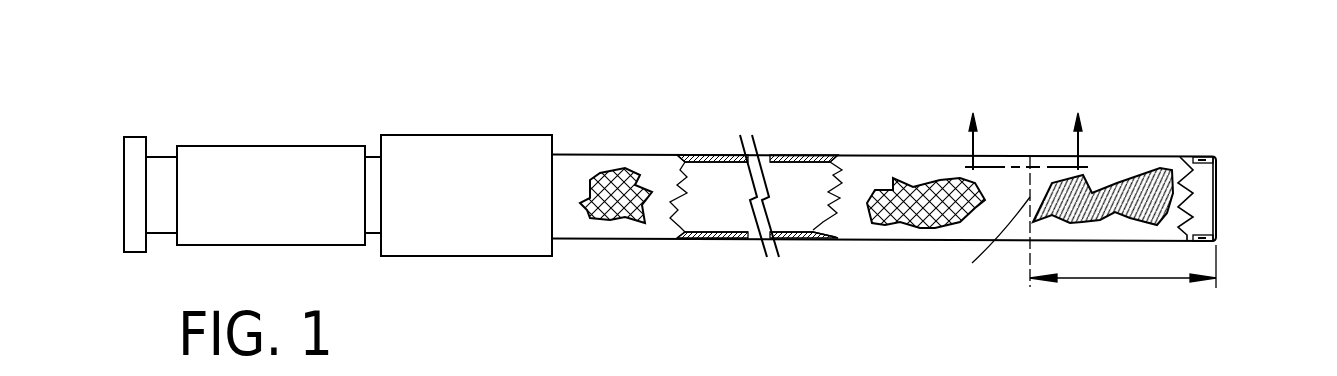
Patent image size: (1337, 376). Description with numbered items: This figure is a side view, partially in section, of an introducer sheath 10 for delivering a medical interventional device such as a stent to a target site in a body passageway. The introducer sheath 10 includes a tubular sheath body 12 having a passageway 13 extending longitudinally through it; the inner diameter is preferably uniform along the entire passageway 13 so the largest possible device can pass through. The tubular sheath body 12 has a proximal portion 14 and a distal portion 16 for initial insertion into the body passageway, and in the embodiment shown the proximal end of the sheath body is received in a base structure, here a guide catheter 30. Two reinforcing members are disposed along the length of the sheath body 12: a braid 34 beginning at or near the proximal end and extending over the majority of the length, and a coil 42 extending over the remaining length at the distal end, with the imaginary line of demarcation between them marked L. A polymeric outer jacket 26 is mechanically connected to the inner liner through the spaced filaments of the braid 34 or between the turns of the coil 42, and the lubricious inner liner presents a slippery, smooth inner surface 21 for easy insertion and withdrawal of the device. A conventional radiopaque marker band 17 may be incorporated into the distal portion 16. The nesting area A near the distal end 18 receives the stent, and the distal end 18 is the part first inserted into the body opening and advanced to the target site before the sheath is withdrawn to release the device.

The introducer sheath 10 is at (766, 98).
The tubular sheath body 12 is at (870, 163).
The passageway 13 is at (805, 215).
The proximal portion 14 is at (568, 153).
The distal portion 16 is at (1191, 158).
The radiopaque marker band 17 is at (1198, 157).
The distal end 18 is at (1215, 157).
The inner surface 21 is at (1215, 223).
The polymeric outer jacket 26 is at (851, 155).
The guide catheter 30 is at (466, 139).
The braid 34 is at (628, 205).
The coil 42 is at (1137, 173).